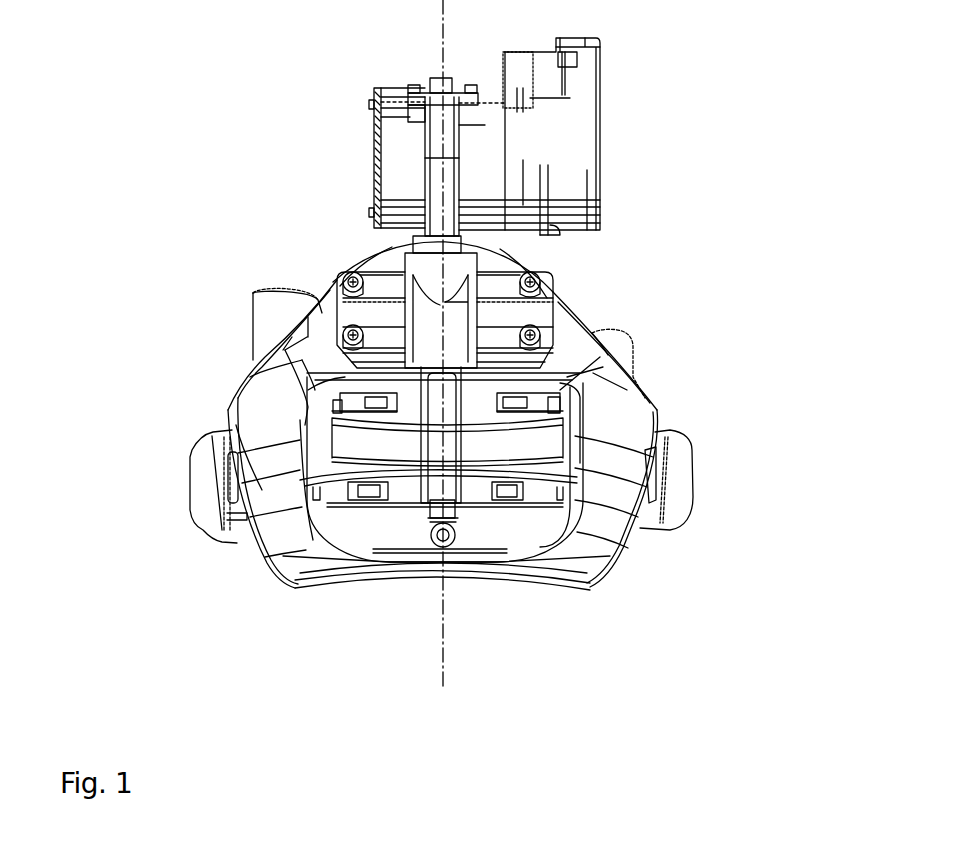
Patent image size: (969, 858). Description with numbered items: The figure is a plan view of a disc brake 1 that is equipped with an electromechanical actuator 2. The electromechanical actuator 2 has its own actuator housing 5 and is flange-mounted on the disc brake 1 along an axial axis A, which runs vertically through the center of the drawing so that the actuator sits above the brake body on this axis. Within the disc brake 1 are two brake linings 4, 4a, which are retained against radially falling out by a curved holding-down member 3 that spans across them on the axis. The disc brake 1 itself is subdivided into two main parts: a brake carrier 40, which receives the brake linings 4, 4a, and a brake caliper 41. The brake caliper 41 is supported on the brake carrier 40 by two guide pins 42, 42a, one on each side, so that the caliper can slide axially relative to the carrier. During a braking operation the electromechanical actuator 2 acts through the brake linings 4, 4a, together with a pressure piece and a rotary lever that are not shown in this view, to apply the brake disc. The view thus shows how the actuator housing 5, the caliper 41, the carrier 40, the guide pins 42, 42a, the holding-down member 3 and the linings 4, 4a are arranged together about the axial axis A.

The disc brake 1 is at (463, 447).
The electromechanical actuator 2 is at (507, 145).
The curved holding-down member 3 is at (460, 517).
The brake lining 4 is at (560, 380).
The brake lining 4a is at (320, 495).
The actuator housing 5 is at (376, 160).
The brake carrier 40 is at (693, 453).
The brake caliper 41 is at (240, 397).
The guide pin 42 is at (627, 332).
The guide pin 42a is at (270, 290).
The axial axis A is at (443, 667).